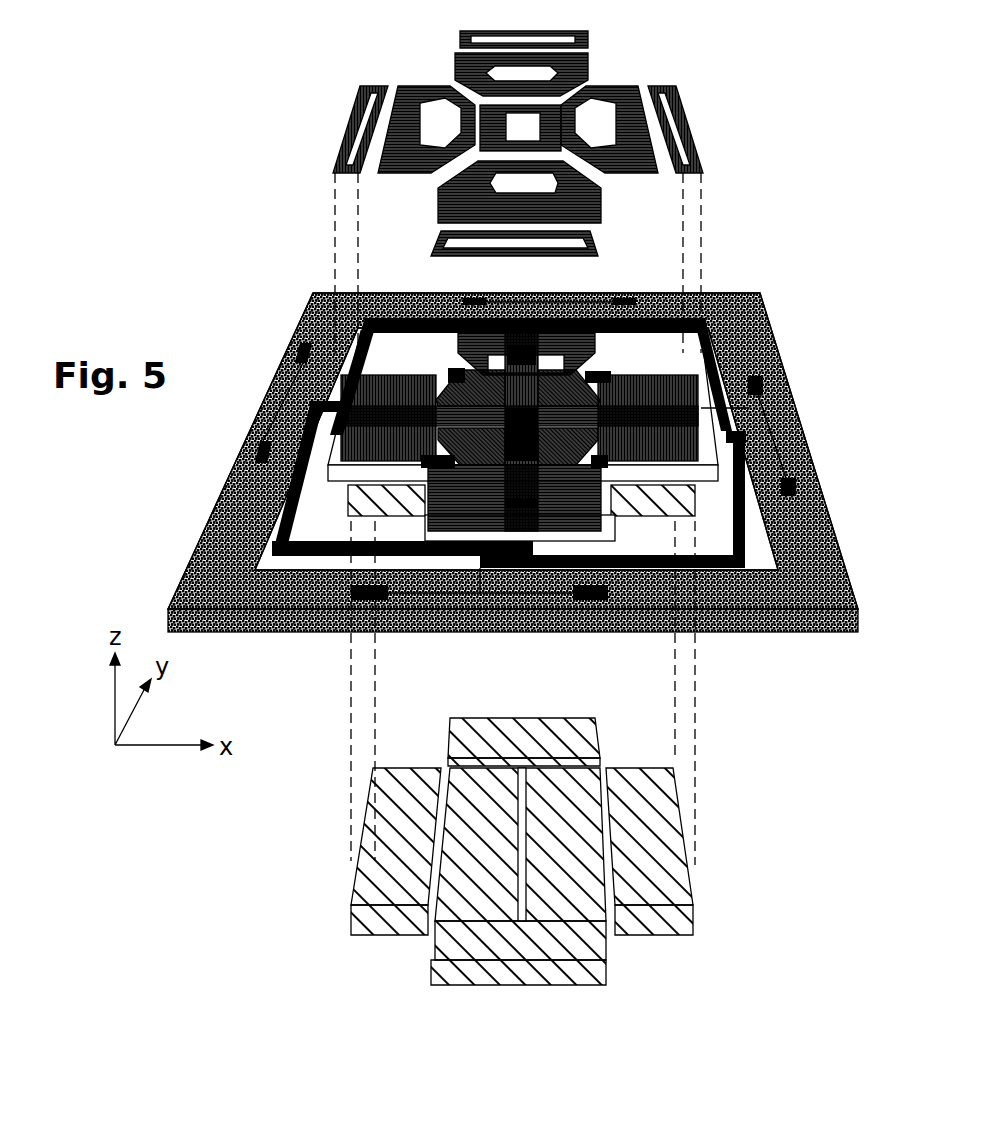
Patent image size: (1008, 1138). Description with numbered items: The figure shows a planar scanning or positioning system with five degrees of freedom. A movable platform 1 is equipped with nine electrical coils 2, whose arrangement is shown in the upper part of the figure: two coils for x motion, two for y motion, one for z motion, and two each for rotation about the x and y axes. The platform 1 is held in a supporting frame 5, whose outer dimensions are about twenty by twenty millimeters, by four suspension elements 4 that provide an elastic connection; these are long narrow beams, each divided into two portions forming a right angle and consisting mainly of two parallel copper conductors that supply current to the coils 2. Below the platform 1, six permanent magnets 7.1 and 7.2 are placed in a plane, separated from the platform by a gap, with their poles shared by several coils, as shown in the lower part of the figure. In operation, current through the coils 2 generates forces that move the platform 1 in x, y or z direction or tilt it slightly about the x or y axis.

The movable platform 1 is at (690, 433).
The electrical coils 2 is at (260, 12).
The suspension elements 4 is at (347, 345).
The supporting frame 5 is at (840, 616).
The permanent magnets 7.1 is at (492, 715).
The permanent magnets 7.2 is at (547, 880).